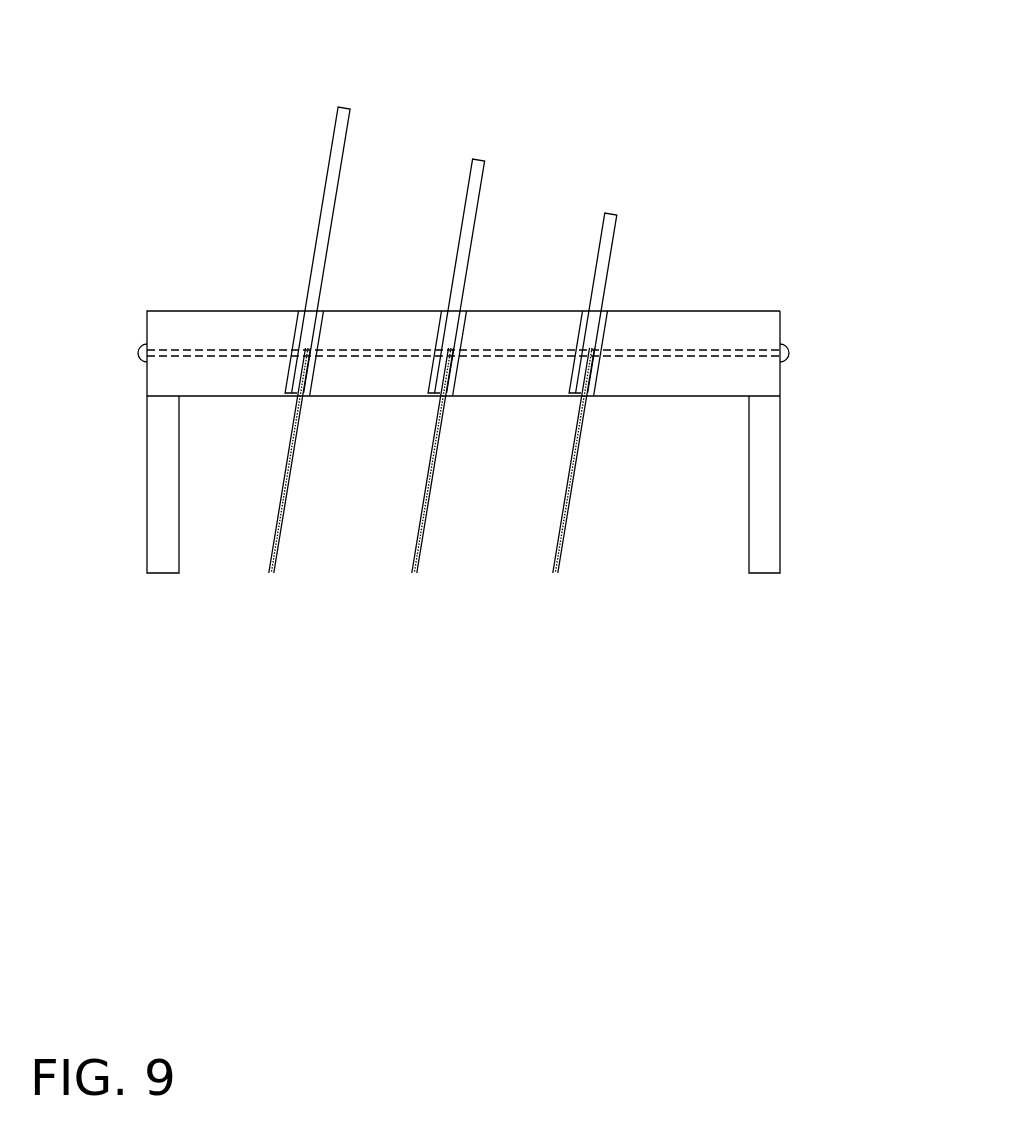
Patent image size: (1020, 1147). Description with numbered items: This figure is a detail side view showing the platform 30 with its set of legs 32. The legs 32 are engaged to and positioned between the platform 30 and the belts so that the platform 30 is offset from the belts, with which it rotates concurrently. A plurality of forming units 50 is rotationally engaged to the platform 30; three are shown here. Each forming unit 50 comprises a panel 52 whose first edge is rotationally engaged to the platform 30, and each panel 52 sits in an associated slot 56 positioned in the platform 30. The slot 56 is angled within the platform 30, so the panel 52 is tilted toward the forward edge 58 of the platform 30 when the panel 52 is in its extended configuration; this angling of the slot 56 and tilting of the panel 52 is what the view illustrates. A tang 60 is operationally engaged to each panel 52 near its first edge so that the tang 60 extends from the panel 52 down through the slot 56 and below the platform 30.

The platform 30 is at (236, 333).
The legs 32 is at (163, 535).
The forming units 50 is at (606, 205).
The panel 52 is at (594, 300).
The slot 56 is at (602, 338).
The forward edge 58 is at (784, 321).
The tang 60 is at (578, 480).